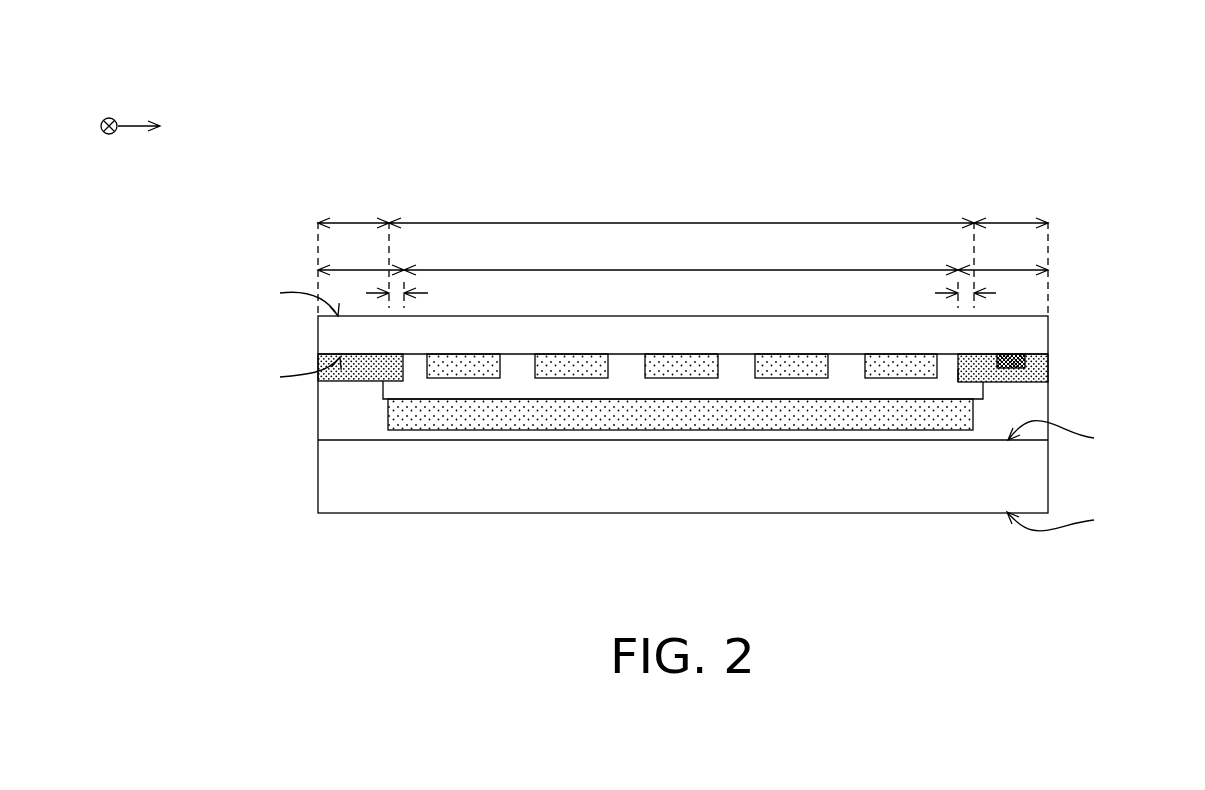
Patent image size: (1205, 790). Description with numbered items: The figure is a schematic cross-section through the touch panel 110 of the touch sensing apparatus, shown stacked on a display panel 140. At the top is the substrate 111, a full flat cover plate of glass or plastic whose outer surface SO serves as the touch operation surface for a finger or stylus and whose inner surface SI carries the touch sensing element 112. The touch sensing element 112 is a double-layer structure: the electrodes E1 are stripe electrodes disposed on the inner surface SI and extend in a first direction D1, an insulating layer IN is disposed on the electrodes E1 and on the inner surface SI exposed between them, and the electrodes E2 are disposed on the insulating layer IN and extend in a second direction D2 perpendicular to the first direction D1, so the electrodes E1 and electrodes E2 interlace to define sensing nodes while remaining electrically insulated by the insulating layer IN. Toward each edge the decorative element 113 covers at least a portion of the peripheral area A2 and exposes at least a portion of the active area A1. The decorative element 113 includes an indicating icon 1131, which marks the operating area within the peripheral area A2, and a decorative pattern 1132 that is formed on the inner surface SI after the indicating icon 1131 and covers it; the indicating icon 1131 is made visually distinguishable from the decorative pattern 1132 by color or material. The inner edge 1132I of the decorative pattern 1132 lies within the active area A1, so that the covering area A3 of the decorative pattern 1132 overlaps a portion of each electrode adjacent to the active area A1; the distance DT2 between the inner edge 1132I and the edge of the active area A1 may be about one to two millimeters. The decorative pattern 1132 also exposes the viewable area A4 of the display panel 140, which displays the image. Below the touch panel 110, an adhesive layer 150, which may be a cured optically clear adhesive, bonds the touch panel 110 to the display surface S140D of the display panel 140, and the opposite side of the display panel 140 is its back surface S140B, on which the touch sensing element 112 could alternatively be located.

The touch panel 110 is at (1110, 307).
The substrate 111 is at (330, 335).
The touch sensing element 112 is at (561, 562).
The decorative element 113 is at (1150, 335).
The indicating icon 1131 is at (1015, 369).
The decorative pattern 1132 is at (1048, 366).
The inner edge of the decorative pattern 1132I is at (945, 373).
The display panel 140 is at (330, 475).
The adhesive layer 150 is at (330, 410).
The outer surface SO is at (293, 297).
The inner surface SI is at (326, 372).
The display surface S140D is at (1085, 435).
The back surface S140B is at (1085, 517).
The electrodes E1 is at (560, 418).
The electrodes E2 is at (463, 371).
The insulating layer IN is at (628, 382).
The active area A1 is at (681, 208).
The peripheral area A2 is at (683, 208).
The covering area A3 is at (683, 255).
The viewable area A4 is at (681, 255).
The distance DT2 is at (681, 293).
The first direction D1 is at (153, 123).
The second direction D2 is at (111, 109).